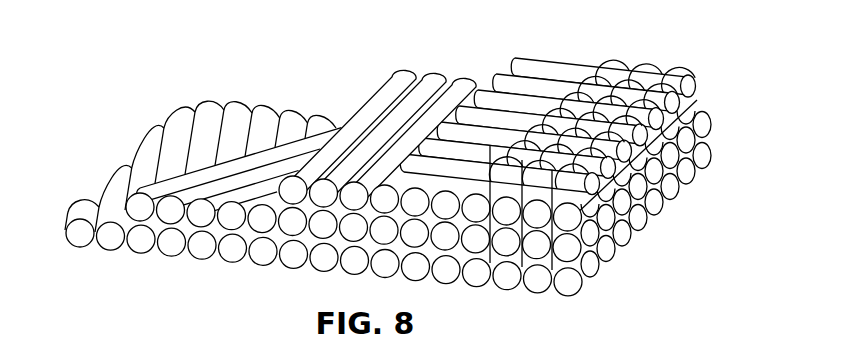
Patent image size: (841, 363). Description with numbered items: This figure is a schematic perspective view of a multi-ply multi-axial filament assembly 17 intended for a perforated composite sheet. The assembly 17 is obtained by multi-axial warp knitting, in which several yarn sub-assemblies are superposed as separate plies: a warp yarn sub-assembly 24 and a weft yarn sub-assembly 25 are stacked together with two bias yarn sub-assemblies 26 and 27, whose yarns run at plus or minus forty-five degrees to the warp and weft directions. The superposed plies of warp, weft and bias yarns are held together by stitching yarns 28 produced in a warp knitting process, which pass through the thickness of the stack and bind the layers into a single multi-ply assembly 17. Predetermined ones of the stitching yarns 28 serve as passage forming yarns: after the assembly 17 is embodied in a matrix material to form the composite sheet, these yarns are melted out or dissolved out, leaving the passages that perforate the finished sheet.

The multi-ply assembly 17 is at (243, 108).
The warp yarn sub-assembly 24 is at (553, 73).
The weft yarn sub-assembly 25 is at (444, 78).
The bias yarn sub-assembly 26 is at (294, 148).
The bias yarn sub-assembly 27 is at (172, 132).
The stitching yarns 28 is at (658, 76).